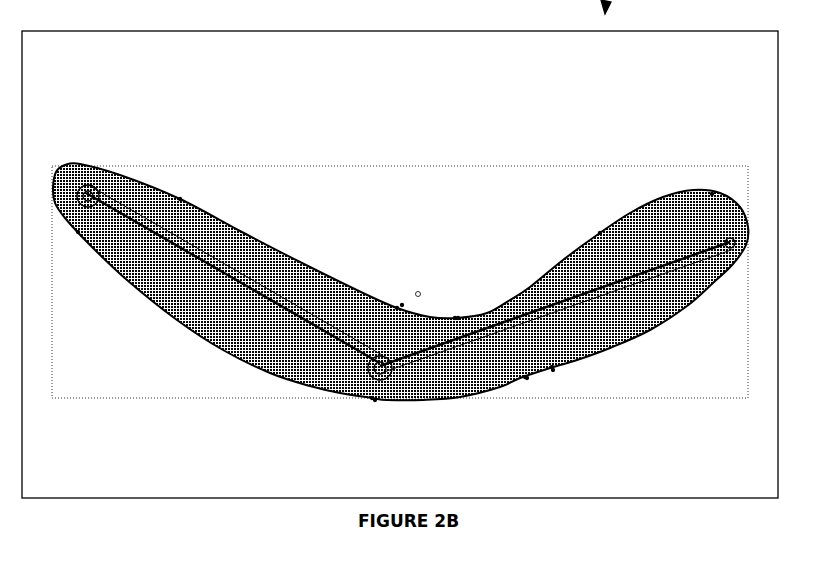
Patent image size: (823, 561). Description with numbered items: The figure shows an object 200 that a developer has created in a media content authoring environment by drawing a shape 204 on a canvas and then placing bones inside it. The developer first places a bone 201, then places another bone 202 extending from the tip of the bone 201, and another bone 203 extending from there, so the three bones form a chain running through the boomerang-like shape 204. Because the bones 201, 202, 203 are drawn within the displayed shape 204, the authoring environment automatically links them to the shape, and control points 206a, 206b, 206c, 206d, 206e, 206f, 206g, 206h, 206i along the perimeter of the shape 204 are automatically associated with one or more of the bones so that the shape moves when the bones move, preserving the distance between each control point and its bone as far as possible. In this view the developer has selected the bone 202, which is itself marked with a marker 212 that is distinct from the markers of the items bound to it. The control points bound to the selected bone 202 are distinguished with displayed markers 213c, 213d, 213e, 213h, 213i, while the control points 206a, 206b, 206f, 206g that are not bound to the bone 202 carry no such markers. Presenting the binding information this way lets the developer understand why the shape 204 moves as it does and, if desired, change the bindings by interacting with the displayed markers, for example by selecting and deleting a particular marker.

The object 200 is at (299, 140).
The bone 201 is at (182, 252).
The bone 202 is at (447, 362).
The bone 203 is at (572, 326).
The shape 204 is at (178, 323).
The control point 206a is at (78, 233).
The control point 206b is at (179, 198).
The control point 206c is at (370, 398).
The control point 206d is at (396, 307).
The control point 206e is at (454, 317).
The control point 206f is at (599, 232).
The control point 206g is at (711, 193).
The control point 206h is at (524, 378).
The control point 206i is at (554, 367).
The marker 212 is at (418, 362).
The displayed marker 213c is at (374, 402).
The displayed marker 213d is at (403, 304).
The displayed marker 213e is at (459, 316).
The displayed marker 213h is at (528, 380).
The displayed marker 213i is at (554, 371).